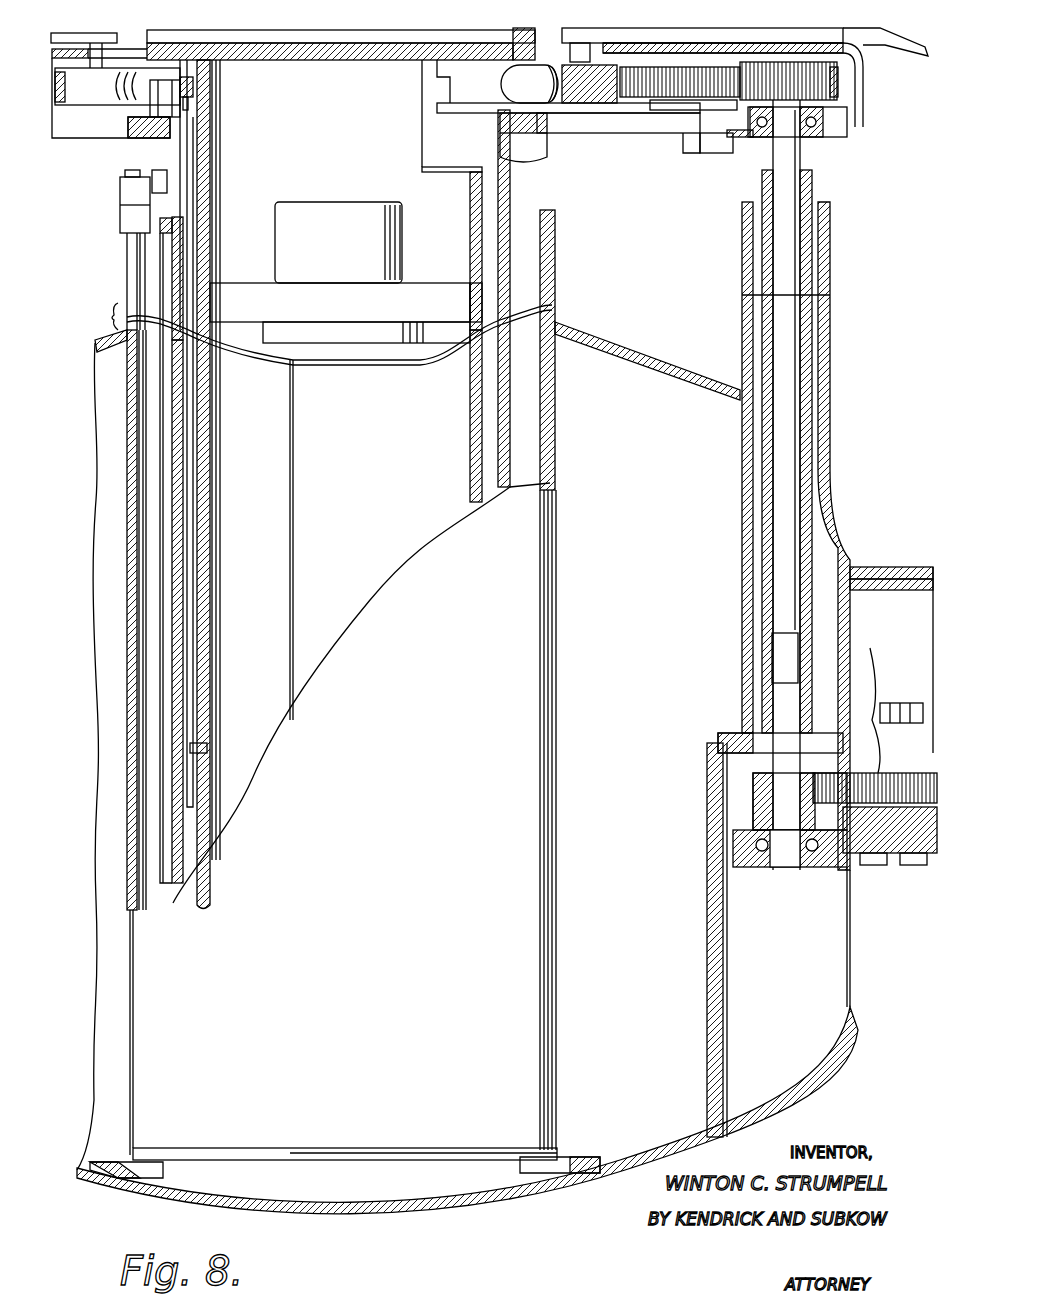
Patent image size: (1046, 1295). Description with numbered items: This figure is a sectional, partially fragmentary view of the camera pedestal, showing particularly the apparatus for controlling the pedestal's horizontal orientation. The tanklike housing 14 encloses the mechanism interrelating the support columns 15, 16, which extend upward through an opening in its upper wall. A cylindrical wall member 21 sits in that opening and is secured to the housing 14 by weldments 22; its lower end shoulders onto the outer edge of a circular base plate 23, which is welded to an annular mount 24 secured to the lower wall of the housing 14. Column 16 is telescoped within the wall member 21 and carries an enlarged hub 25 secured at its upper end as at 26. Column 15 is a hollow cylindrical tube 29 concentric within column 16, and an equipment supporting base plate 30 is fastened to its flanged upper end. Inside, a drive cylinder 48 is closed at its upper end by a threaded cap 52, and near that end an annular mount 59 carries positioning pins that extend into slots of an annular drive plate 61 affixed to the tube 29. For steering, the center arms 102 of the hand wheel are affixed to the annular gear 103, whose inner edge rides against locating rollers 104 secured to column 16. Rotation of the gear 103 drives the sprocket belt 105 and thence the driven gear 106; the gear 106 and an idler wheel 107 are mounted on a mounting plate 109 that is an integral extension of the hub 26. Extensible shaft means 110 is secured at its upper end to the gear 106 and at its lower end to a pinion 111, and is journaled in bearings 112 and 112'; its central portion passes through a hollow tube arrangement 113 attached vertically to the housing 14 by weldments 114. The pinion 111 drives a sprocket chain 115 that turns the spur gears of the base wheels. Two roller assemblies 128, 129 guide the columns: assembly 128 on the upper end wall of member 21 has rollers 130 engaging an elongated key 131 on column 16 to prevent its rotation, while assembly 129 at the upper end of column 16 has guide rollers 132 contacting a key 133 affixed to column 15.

The housing 14 is at (853, 975).
The support column 15 is at (215, 163).
The support column 16 is at (174, 522).
The cylindrical wall member 21 is at (125, 458).
The weldments 22 is at (558, 327).
The circular base plate 23 is at (412, 1161).
The annular mount 24 is at (163, 1168).
The hub 25 is at (864, 71).
The hub 26 is at (563, 121).
The hollow cylindrical tube 29 is at (470, 200).
The equipment supporting base plate 30 is at (243, 57).
The drive cylinder 48 is at (298, 472).
The cap 52 is at (366, 210).
The annular mount 59 is at (407, 350).
The annular drive plate 61 is at (255, 268).
The center arms 102 is at (83, 33).
The annular gear 103 is at (601, 97).
The locating rollers 104 is at (536, 72).
The sprocket belt 105 is at (648, 70).
The driven gear 106 is at (803, 62).
The idler wheel 107 is at (672, 104).
The mounting plate 109 is at (836, 119).
The extensible shaft means 110 is at (790, 191).
The pinion 111 is at (752, 786).
The bearing 112 is at (819, 142).
The bearing 112' is at (781, 875).
The hollow tube arrangement 113 is at (745, 312).
The weldments 114 is at (745, 392).
The sprocket chain 115 is at (905, 703).
The roller assembly 128 is at (116, 203).
The roller assembly 129 is at (150, 110).
The rollers 130 is at (155, 172).
The elongated key 131 is at (172, 277).
The guide rollers 132 is at (193, 107).
The key 133 is at (190, 200).